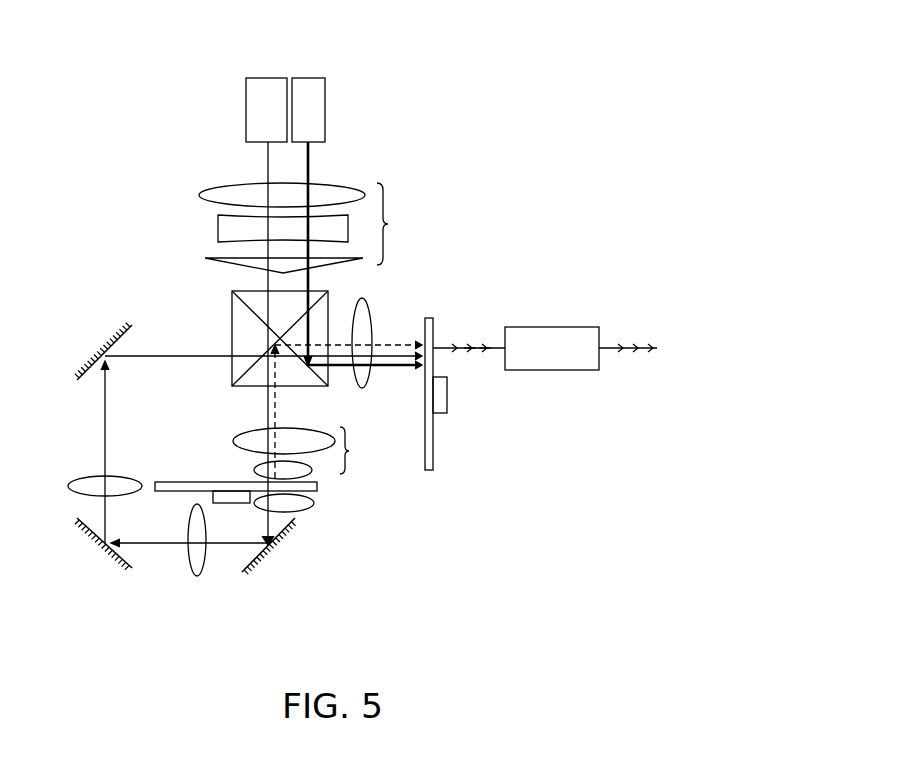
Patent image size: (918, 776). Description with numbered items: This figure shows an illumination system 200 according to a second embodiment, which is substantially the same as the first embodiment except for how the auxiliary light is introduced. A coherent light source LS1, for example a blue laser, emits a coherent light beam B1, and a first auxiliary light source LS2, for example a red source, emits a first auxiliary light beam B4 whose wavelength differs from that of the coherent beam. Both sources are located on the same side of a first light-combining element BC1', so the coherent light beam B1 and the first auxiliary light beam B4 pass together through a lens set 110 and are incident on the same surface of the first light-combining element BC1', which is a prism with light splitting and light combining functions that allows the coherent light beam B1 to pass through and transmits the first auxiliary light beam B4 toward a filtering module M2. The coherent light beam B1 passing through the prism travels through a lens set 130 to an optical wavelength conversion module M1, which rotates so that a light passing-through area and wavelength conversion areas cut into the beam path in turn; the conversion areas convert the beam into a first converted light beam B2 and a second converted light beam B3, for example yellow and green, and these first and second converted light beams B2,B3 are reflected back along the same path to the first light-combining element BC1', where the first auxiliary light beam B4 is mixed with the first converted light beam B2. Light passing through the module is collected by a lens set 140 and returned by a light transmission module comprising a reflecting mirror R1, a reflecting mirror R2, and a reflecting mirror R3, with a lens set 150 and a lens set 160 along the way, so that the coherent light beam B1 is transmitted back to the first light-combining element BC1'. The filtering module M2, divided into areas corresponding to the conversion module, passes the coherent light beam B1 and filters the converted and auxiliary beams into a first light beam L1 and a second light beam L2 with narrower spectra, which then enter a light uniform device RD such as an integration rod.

The illumination system 200 is at (597, 626).
The coherent light source LS1 is at (266, 88).
The first auxiliary light source LS2 is at (312, 88).
The coherent light beam B1 is at (266, 166).
The first auxiliary light beam B4 is at (310, 168).
The lens set 110 is at (308, 228).
The first light-combining element BC1' is at (334, 328).
The first and second converted light beams B2,B3 is at (348, 409).
The first converted light beam B2 is at (275, 411).
The second converted light beam B3 is at (348, 345).
The lens set 130 is at (304, 453).
The optical wavelength conversion module M1 is at (318, 484).
The lens set 140 is at (322, 503).
The reflecting mirror R1 is at (266, 552).
The reflecting mirror R2 is at (110, 558).
The reflecting mirror R3 is at (114, 340).
The lens set 160 is at (62, 488).
The lens set 150 is at (197, 586).
The filtering module M2 is at (429, 471).
The light uniform device RD is at (551, 337).
The first light beam L1 is at (484, 345).
The second light beam L2 is at (468, 345).